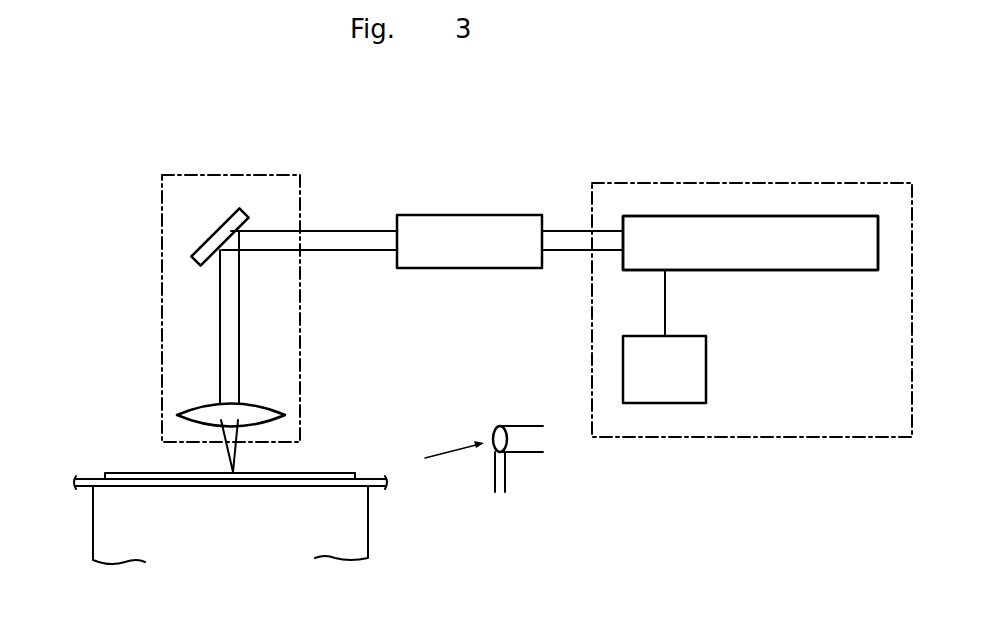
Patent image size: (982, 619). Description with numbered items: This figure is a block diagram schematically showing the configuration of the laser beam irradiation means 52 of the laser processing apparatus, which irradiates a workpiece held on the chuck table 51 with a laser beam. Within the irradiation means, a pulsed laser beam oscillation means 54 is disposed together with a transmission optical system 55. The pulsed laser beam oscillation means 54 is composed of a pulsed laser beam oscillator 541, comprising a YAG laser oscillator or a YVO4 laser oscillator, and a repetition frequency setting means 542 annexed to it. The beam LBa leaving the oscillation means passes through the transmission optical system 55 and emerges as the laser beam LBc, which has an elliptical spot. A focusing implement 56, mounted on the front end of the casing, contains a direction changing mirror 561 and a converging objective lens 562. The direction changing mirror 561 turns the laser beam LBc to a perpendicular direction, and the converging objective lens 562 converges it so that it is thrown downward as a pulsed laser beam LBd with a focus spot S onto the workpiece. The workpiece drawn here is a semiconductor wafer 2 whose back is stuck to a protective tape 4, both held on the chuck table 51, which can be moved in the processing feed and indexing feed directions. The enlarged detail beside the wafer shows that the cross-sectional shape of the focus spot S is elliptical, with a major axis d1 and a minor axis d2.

The semiconductor wafer 2 is at (115, 471).
The protective tape 4 is at (75, 479).
The chuck table 51 is at (93, 530).
The laser beam irradiation means 52 is at (615, 140).
The pulsed laser beam oscillation means 54 is at (810, 180).
The pulsed laser beam oscillator 541 is at (838, 272).
The repetition frequency setting means 542 is at (706, 373).
The transmission optical system 55 is at (468, 213).
The focusing implement 56 is at (236, 172).
The direction changing mirror 561 is at (200, 233).
The converging objective lens 562 is at (200, 405).
The laser beam LBa is at (566, 231).
The laser beam LBc is at (343, 231).
The pulsed laser beam LBd is at (232, 453).
The focus spot S is at (232, 473).
The major axis d1 is at (535, 427).
The minor axis d2 is at (535, 483).